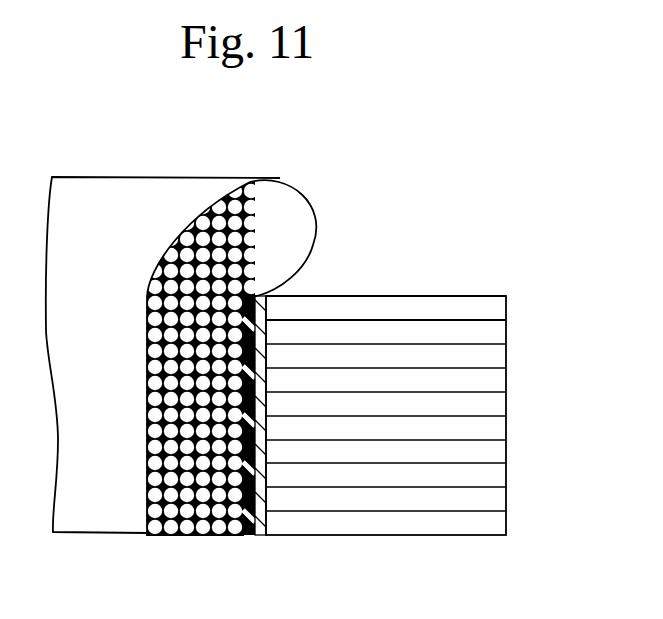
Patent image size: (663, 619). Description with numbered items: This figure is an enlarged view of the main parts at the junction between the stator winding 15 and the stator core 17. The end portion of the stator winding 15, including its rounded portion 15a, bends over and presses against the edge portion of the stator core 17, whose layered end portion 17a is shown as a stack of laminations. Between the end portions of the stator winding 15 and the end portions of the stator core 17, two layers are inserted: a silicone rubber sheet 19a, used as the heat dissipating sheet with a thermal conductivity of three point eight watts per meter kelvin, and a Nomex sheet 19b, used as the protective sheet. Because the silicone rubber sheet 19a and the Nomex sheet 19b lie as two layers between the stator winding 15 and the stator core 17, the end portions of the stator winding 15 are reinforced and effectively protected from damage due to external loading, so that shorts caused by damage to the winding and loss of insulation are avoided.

The stator winding 15 is at (181, 167).
The bead portion 15a is at (305, 188).
The stator core 17 is at (540, 326).
The top layer of laminated block 17a is at (380, 304).
The silicone rubber sheet 19a is at (248, 538).
The Nomex sheet 19b is at (259, 538).